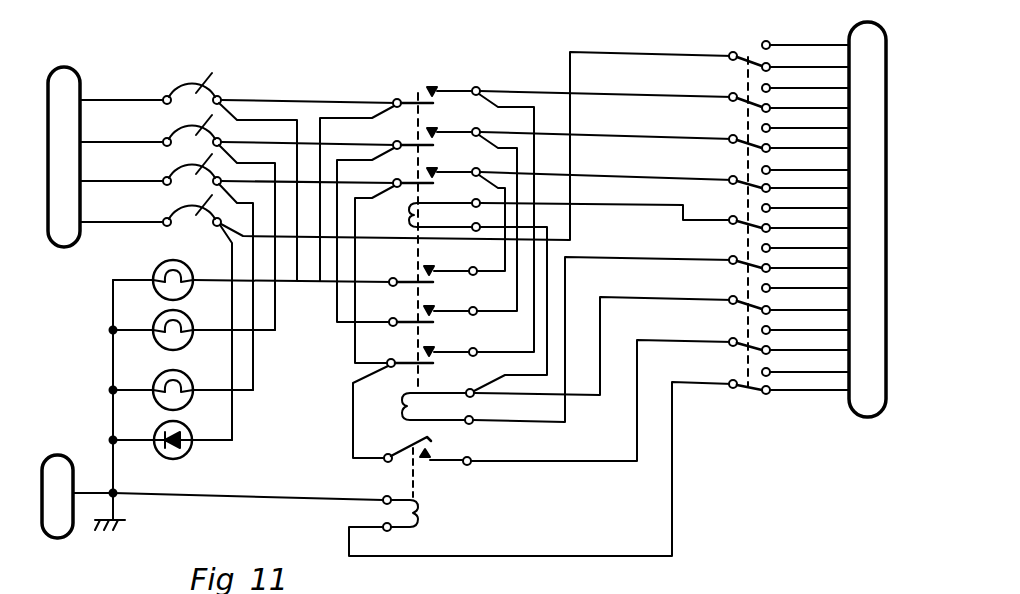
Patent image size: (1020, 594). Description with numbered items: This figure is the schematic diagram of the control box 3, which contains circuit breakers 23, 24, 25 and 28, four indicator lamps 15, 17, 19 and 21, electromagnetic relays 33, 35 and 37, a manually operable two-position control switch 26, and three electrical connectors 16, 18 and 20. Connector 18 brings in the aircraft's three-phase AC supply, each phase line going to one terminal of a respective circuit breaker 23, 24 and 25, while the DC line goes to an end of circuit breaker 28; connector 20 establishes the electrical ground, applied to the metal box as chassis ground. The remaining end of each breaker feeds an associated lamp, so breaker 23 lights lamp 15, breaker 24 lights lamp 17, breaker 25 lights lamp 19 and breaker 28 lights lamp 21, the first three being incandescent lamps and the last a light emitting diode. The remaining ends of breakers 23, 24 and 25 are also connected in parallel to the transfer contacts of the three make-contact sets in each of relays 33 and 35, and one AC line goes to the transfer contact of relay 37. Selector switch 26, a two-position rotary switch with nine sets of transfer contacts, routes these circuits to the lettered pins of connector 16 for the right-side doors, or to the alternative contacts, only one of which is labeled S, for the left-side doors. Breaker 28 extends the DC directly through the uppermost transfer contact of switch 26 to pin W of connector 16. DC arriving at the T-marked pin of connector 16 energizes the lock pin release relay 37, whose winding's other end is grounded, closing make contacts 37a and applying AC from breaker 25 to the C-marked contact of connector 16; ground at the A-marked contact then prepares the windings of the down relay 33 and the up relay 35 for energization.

The electrical connector 18 is at (77, 66).
The circuit breaker 23 is at (168, 80).
The circuit breaker 24 is at (168, 122).
The circuit breaker 25 is at (168, 161).
The circuit breaker 28 is at (168, 203).
The indicator lamp 15 is at (156, 262).
The indicator lamp 17 is at (154, 313).
The indicator lamp 19 is at (154, 373).
The indicator lamp 21 is at (154, 423).
The electrical connector 20 is at (72, 455).
The control box 3 is at (378, 86).
The electromagnetic relay 35 is at (408, 217).
The electromagnetic relay 33 is at (404, 409).
The make contacts 37a is at (433, 441).
The electromagnetic relay 37 is at (420, 511).
The selector switch 26 is at (744, 398).
The electrical connector 16 is at (856, 22).